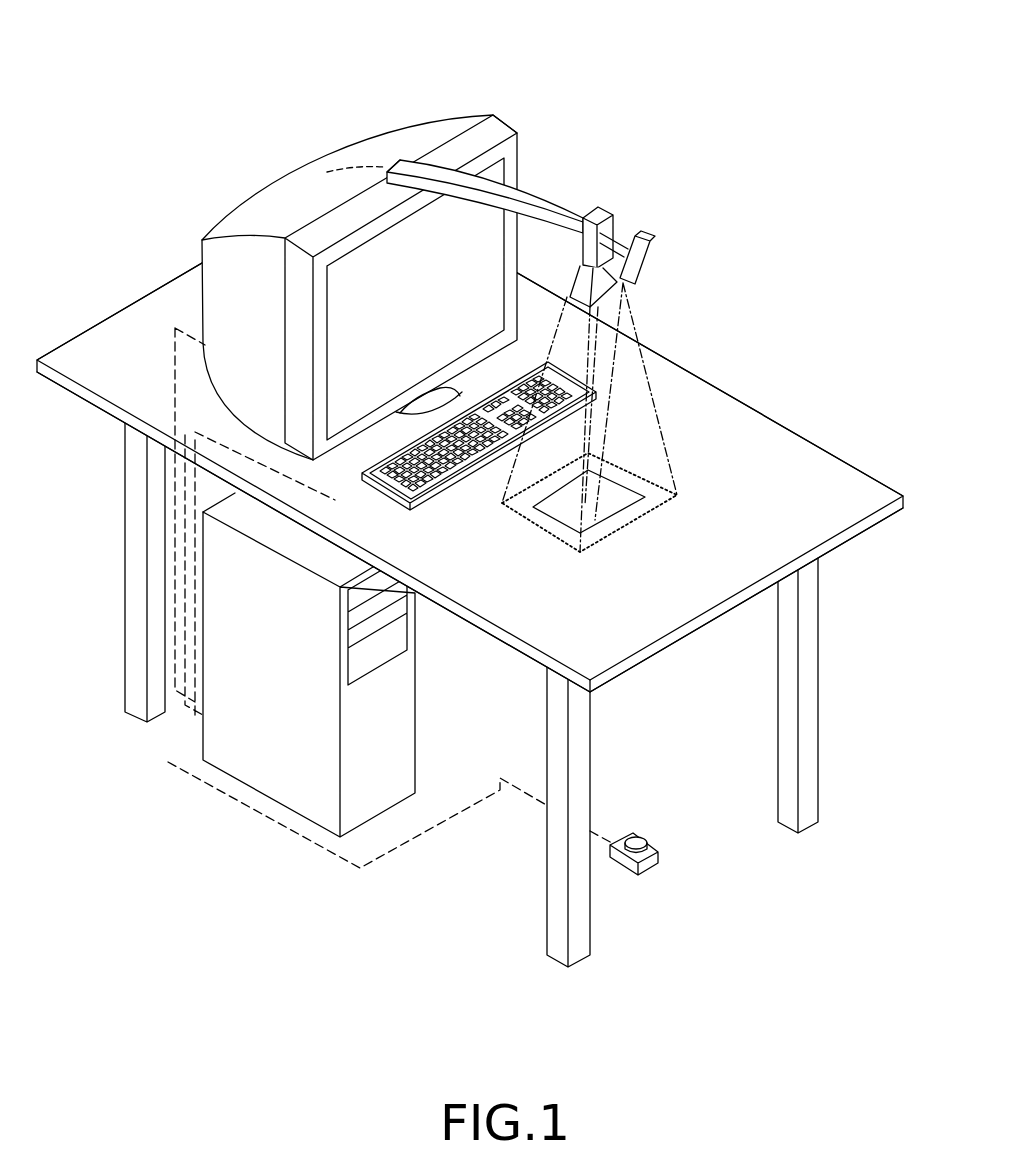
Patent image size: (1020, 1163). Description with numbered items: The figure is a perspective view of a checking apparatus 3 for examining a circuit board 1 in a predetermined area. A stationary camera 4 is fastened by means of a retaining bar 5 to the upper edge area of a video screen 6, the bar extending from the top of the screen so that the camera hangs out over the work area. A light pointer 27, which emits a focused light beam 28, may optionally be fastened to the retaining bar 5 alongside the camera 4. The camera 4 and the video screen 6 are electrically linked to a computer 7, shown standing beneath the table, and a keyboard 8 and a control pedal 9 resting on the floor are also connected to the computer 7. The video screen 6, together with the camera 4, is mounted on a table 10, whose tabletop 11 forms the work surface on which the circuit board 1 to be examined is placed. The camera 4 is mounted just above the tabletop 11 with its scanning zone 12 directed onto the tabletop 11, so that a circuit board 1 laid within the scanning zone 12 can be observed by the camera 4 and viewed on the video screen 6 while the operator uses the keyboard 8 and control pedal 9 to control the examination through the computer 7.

The circuit board 1 is at (610, 520).
The checking apparatus 3 is at (365, 80).
The stationary camera 4 is at (598, 210).
The retaining bar 5 is at (545, 200).
The video screen 6 is at (431, 312).
The computer 7 is at (280, 668).
The keyboard 8 is at (463, 485).
The control pedal 9 is at (658, 855).
The table 10 is at (499, 571).
The tabletop 11 is at (803, 473).
The scanning zone 12 is at (650, 512).
The light pointer 27 is at (652, 262).
The focused light beam 28 is at (652, 355).